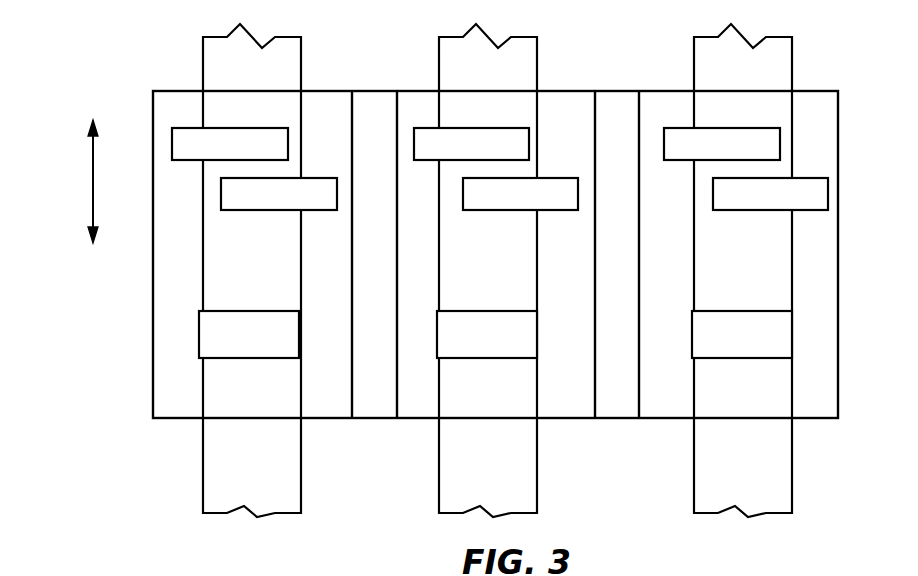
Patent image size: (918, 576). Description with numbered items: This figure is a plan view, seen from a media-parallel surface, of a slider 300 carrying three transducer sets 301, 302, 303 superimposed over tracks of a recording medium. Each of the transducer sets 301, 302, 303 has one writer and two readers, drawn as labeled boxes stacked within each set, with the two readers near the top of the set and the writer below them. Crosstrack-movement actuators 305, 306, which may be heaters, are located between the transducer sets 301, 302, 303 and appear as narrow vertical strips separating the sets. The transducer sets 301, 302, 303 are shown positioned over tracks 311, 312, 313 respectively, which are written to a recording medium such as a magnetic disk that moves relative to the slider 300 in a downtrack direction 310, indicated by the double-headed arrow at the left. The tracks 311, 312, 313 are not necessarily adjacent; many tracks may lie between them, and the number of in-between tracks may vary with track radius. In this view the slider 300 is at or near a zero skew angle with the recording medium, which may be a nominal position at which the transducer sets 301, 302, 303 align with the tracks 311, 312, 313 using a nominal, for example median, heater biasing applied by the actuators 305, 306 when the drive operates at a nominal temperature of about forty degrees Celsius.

The slider 300 is at (153, 292).
The first transducer set 301 is at (318, 106).
The second transducer set 302 is at (555, 106).
The third transducer set 303 is at (822, 106).
The crosstrack-movement actuator 305 is at (372, 415).
The crosstrack-movement actuator 306 is at (622, 415).
The downtrack direction 310 is at (93, 180).
The first track 311 is at (210, 483).
The second track 312 is at (453, 503).
The third track 313 is at (702, 497).